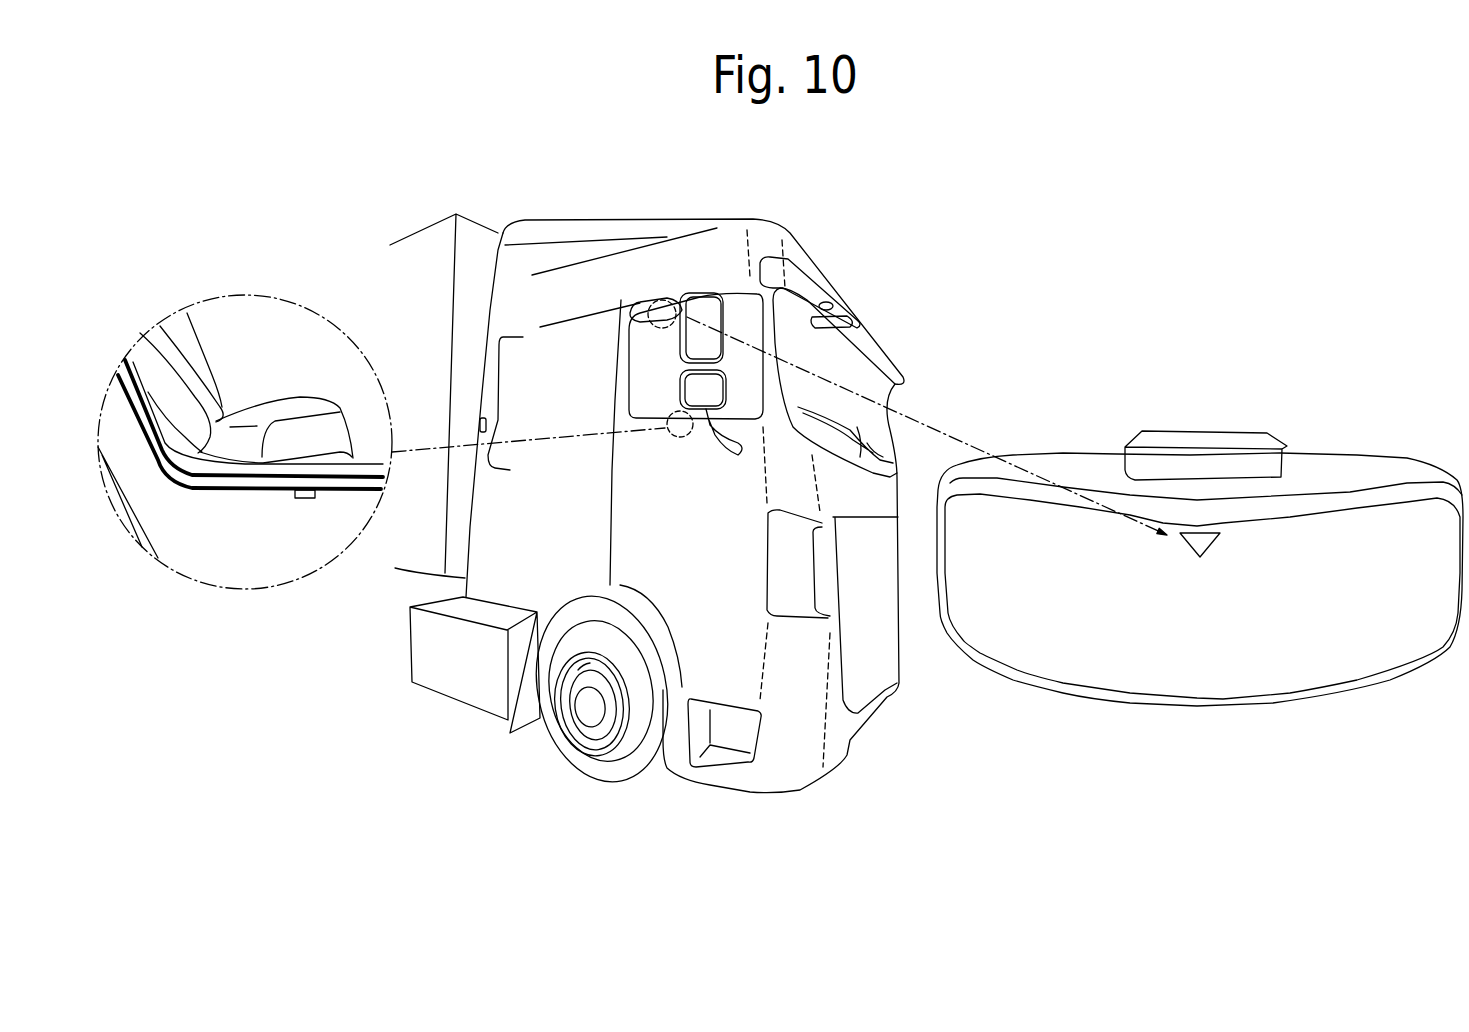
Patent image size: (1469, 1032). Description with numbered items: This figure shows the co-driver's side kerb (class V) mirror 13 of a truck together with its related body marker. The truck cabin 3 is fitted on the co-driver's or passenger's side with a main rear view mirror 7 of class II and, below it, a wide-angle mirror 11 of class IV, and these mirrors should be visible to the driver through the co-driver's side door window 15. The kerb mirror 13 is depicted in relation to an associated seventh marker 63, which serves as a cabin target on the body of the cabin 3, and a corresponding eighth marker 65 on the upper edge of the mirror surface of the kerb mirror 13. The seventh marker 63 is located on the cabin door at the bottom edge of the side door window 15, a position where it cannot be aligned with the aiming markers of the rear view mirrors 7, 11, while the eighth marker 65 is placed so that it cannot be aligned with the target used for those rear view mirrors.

The cabin 3 is at (722, 650).
The main rear view mirror 7 is at (703, 300).
The wide-angle mirror 11 is at (702, 390).
The kerb mirror 13 is at (635, 305).
The co-driver's side door window 15 is at (647, 362).
The seventh marker 63 is at (678, 437).
The eighth marker 65 is at (1206, 526).